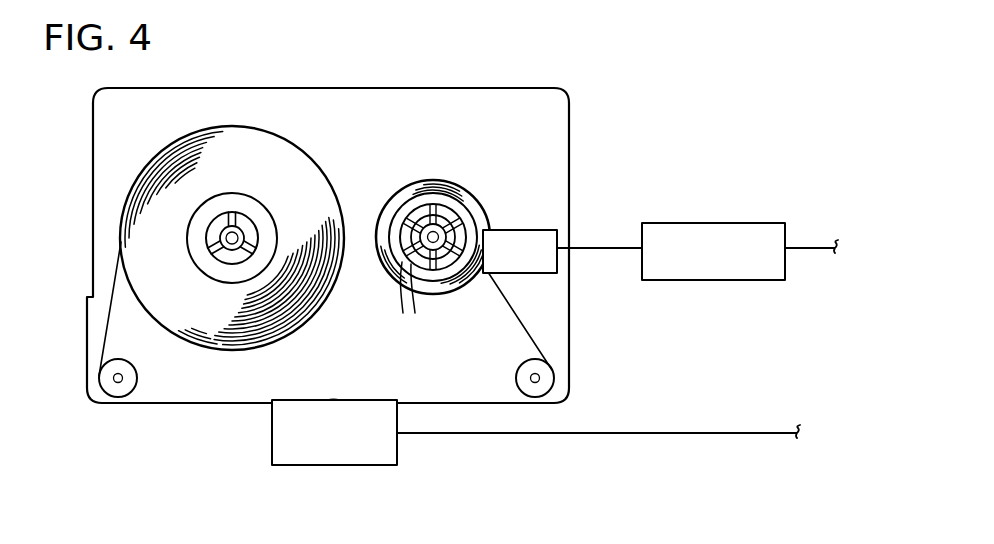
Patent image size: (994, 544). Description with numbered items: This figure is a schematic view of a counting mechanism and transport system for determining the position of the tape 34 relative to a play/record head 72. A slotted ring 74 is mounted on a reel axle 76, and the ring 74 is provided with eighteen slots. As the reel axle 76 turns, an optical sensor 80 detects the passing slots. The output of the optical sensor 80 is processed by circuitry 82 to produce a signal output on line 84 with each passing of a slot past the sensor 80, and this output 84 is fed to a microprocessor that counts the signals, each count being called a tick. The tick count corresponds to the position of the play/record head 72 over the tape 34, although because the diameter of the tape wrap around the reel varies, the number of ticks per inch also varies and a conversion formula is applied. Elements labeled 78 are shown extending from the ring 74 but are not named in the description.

The tape 34 is at (523, 305).
The play/record head 72 is at (272, 438).
The slotted ring 74 is at (422, 206).
The reel axle 76 is at (441, 218).
The sensor target elements 78 is at (412, 300).
The optical sensor 80 is at (522, 230).
The circuitry 82 is at (702, 223).
The output line 84 is at (807, 248).